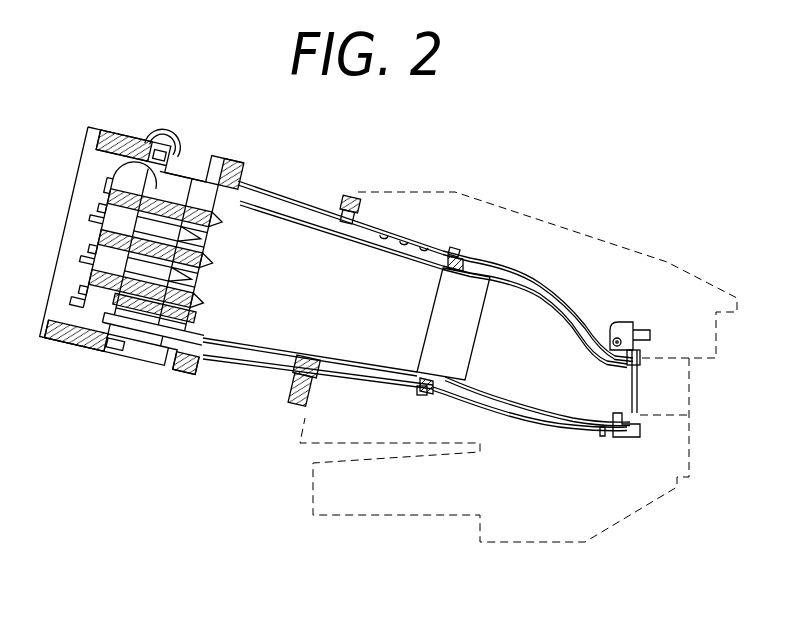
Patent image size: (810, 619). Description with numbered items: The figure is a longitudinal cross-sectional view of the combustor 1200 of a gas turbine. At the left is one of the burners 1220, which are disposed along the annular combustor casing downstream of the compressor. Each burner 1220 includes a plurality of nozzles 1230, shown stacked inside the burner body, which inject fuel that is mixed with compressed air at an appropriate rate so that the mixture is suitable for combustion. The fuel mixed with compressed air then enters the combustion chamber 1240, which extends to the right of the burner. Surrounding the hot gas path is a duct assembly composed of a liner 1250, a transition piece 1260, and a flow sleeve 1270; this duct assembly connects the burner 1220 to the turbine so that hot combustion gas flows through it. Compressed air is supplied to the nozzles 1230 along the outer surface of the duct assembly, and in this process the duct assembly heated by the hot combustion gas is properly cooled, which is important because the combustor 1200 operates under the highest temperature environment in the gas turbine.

The combustor 1200 is at (151, 41).
The burner 1220 is at (85, 228).
The nozzle 1230 is at (98, 335).
The combustion chamber 1240 is at (245, 320).
The liner 1250 is at (280, 206).
The transition piece 1260 is at (482, 269).
The flow sleeve 1270 is at (516, 262).